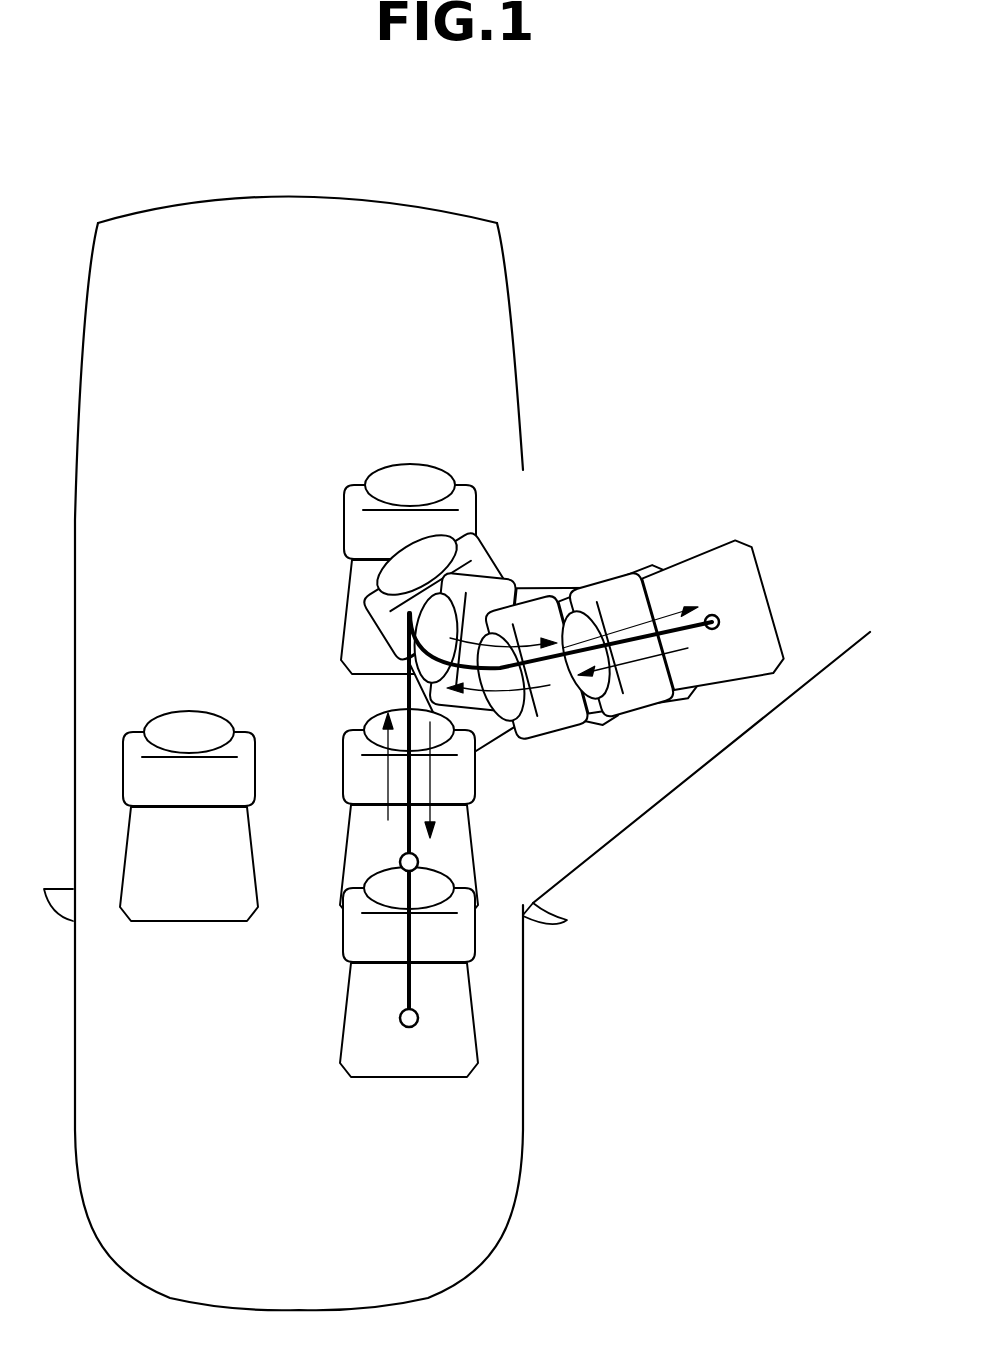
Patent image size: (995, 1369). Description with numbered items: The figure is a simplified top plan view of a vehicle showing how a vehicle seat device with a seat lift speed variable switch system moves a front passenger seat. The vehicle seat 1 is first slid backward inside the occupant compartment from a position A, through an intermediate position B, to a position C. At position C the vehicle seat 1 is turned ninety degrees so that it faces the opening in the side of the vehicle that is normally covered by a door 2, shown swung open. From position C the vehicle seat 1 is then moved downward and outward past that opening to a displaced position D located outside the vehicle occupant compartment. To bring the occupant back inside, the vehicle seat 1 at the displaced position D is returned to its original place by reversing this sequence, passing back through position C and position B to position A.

The vehicle seat 1 is at (450, 1040).
The door 2 is at (703, 773).
The position A is at (378, 1020).
The position B is at (378, 862).
The position C is at (347, 604).
The displaced position D is at (707, 592).